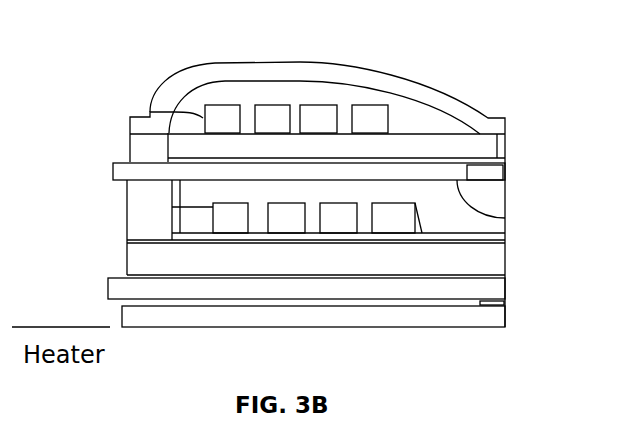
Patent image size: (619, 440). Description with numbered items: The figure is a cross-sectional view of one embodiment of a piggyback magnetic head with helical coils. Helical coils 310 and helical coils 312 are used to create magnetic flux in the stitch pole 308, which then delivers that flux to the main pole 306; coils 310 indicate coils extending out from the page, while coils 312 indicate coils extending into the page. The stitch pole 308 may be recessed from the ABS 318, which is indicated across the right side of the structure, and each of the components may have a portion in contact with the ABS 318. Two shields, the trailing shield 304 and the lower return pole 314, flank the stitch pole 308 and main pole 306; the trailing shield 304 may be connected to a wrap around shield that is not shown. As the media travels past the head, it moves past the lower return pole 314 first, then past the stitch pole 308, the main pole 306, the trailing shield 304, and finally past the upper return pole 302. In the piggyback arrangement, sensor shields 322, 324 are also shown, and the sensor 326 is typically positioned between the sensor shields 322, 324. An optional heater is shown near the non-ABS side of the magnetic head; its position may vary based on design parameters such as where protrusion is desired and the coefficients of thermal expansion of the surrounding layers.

The upper return pole 302 is at (445, 92).
The trailing shield 304 is at (507, 150).
The main pole 306 is at (507, 172).
The stitch pole 308 is at (505, 216).
The helical coils 310 is at (153, 116).
The helical coils 312 is at (220, 203).
The lower return pole 314 is at (351, 267).
The ABS 318 is at (512, 247).
The sensor shield 322 is at (108, 288).
The sensor shield 324 is at (122, 312).
The sensor 326 is at (500, 302).